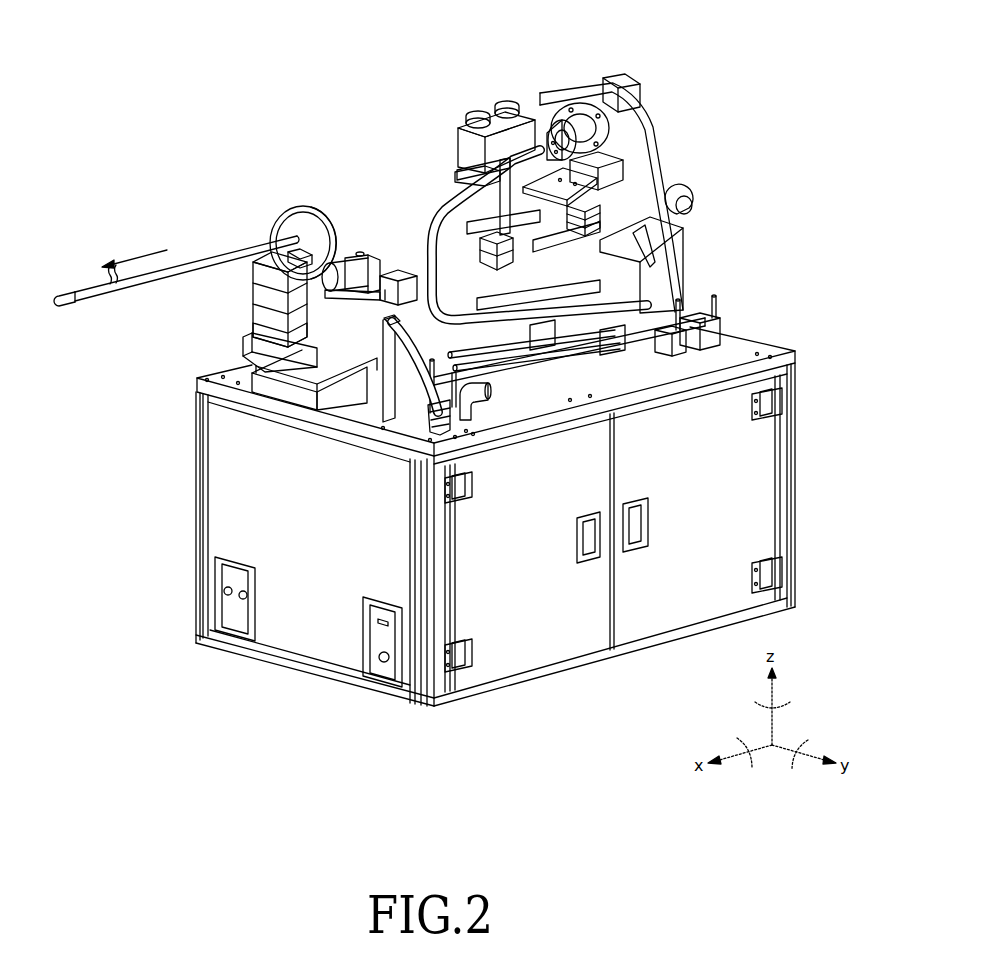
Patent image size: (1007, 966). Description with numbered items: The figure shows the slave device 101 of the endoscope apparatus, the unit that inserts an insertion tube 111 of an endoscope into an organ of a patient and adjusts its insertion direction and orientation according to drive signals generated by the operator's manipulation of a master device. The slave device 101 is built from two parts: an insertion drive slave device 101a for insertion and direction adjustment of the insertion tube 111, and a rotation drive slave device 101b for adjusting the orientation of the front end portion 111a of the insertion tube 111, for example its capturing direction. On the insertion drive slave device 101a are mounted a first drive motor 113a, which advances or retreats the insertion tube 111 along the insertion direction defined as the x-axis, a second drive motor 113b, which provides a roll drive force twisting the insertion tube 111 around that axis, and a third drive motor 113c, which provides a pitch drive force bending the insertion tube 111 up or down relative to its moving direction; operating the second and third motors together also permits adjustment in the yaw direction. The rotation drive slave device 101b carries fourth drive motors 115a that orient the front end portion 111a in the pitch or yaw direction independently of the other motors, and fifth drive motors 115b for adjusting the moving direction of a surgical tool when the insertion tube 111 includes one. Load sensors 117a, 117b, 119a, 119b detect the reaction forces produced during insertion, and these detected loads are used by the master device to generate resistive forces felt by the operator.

The slave device 101 is at (250, 112).
The insertion drive slave device 101a is at (240, 313).
The rotation drive slave device 101b is at (664, 120).
The insertion tube 111 is at (190, 262).
The front end portion 111a is at (62, 290).
The first drive motor 113a is at (253, 322).
The second drive motor 113b is at (397, 262).
The third drive motor 113c is at (433, 340).
The fourth drive motor 115a is at (533, 257).
The fifth drive motor 115b is at (590, 197).
The load sensor 117a is at (257, 272).
The load sensor 117b is at (360, 252).
The load sensor 119a is at (470, 123).
The load sensor 119b is at (550, 120).